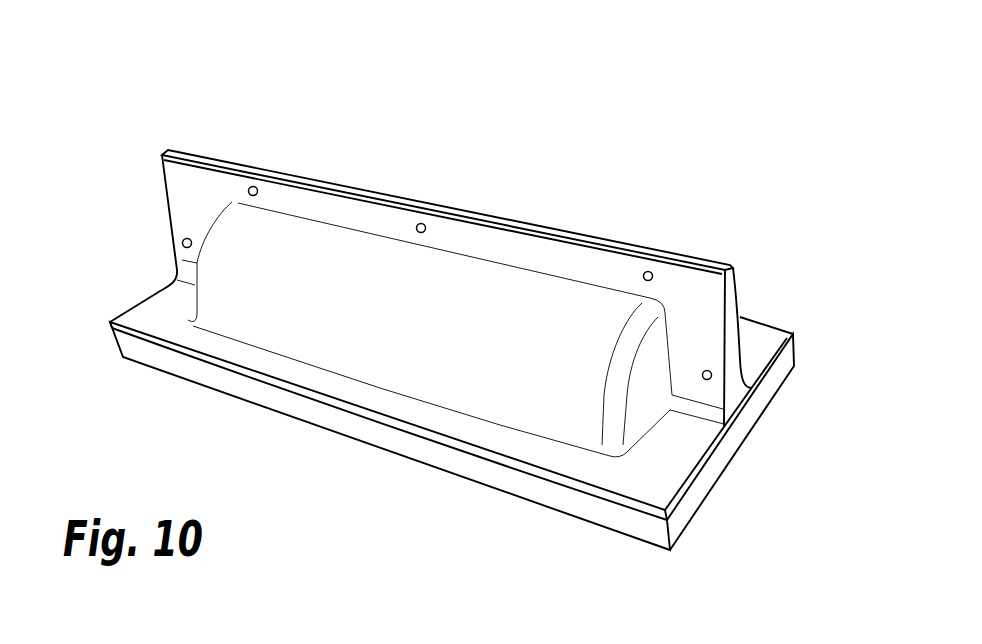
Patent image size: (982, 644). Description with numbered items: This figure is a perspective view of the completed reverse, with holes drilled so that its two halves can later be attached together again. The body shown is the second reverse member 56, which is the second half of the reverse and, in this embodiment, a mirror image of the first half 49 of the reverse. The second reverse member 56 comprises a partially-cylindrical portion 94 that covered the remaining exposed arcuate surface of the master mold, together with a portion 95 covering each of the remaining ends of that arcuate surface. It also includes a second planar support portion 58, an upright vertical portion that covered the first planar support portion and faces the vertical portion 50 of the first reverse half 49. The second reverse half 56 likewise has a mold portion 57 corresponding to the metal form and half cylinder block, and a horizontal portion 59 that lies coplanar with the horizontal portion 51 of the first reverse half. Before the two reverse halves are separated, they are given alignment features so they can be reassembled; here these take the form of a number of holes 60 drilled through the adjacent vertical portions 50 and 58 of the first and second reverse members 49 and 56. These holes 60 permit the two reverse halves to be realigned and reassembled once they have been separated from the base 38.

The base 38 is at (705, 485).
The first half of the reverse 49 is at (677, 250).
The vertical portion of the first reverse half 50 is at (742, 286).
The horizontal portion of the first reverse half 51 is at (780, 333).
The second reverse member 56 is at (383, 498).
The mold portion 57 is at (570, 430).
The second planar support portion 58 is at (692, 283).
The horizontal portion of the second reverse half 59 is at (662, 486).
The holes 60 is at (253, 186).
The partially-cylindrical portion 94 is at (313, 317).
The portion covering the ends of the arcuate surface 95 is at (646, 401).